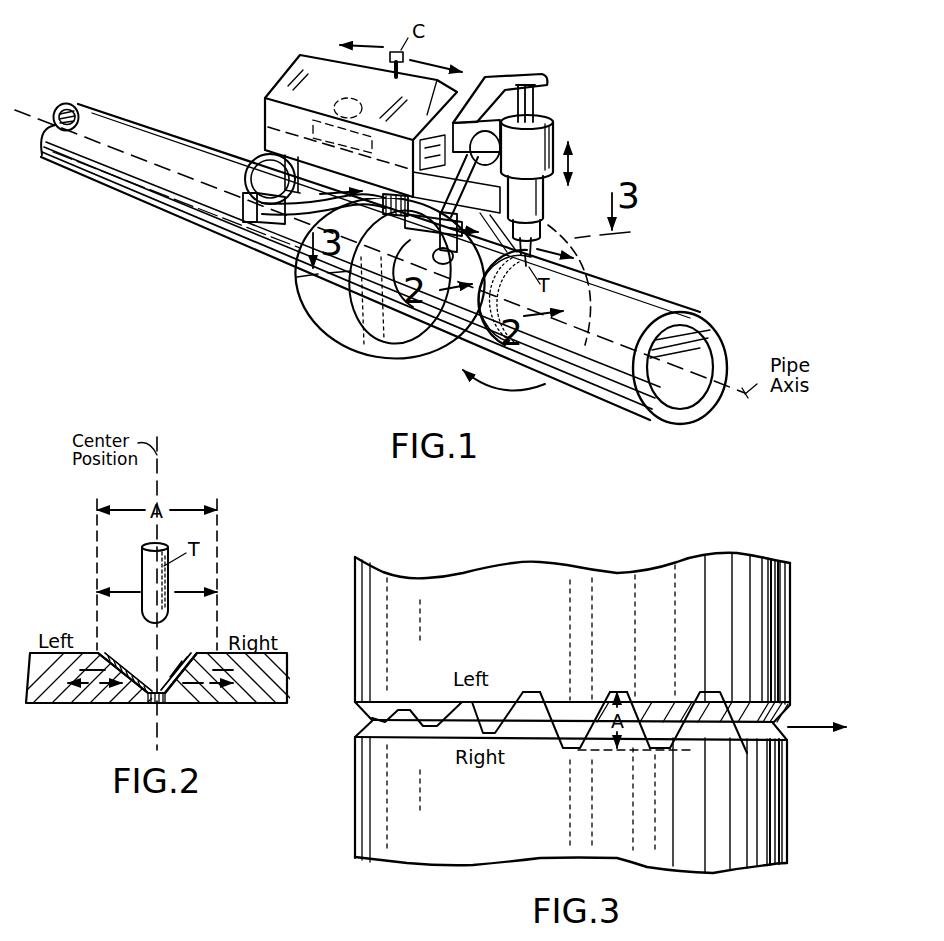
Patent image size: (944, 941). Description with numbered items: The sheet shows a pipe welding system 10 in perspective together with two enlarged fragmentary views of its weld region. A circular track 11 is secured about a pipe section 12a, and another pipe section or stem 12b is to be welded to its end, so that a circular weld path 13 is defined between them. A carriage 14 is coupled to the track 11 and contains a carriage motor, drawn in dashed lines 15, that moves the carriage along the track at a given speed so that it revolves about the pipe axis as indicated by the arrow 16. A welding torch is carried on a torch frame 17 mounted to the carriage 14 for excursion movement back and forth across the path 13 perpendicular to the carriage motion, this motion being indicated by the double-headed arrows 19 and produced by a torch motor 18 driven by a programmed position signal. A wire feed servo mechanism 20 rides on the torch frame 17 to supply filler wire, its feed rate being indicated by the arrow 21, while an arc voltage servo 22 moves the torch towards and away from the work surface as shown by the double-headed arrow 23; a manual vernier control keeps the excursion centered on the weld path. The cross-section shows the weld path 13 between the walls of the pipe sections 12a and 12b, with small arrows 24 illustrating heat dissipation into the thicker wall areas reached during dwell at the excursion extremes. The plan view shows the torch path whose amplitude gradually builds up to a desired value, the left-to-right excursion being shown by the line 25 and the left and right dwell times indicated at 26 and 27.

In FIG. 1, the welding apparatus 10 is at (494, 44).
In FIG. 1, the circular track 11 is at (355, 338).
In FIG. 1, the pipe section 12a is at (440, 308).
In FIG. 2, the pipe section 12a is at (53, 704).
In FIG. 3, the pipe section 12a is at (790, 650).
In FIG. 1, the pipe section or stem 12b is at (620, 372).
In FIG. 2, the pipe section or stem 12b is at (233, 704).
In FIG. 3, the pipe section or stem 12b is at (790, 781).
In FIG. 1, the circular weld path 13 is at (492, 331).
In FIG. 2, the circular weld path 13 is at (162, 678).
In FIG. 3, the circular weld path 13 is at (538, 733).
In FIG. 1, the carriage 14 is at (283, 92).
In FIG. 1, the carriage motor 15 is at (268, 127).
In FIG. 1, the arrow 16 is at (538, 386).
In FIG. 3, the arrow 16 is at (812, 725).
In FIG. 1, the torch frame 17 is at (423, 136).
In FIG. 1, the torch motor 18 is at (296, 63).
In FIG. 1, the double-headed arrows 19 is at (552, 253).
In FIG. 1, the wire feed servo mechanism 20 is at (413, 236).
In FIG. 1, the arrow 21 is at (305, 180).
In FIG. 1, the arc voltage servo 22 is at (556, 130).
In FIG. 1, the double-headed arrow 23 is at (578, 158).
In FIG. 2, the small arrows 24 is at (118, 686).
In FIG. 3, the line 25 is at (545, 703).
In FIG. 3, the left dwell time 26 is at (617, 690).
In FIG. 3, the right dwell time 27 is at (660, 752).